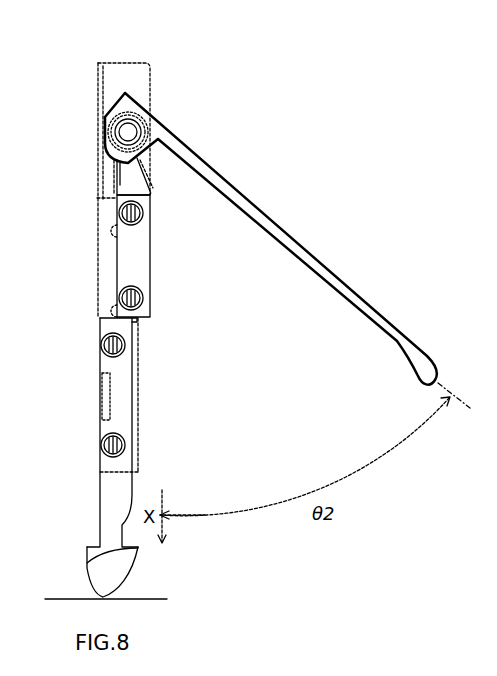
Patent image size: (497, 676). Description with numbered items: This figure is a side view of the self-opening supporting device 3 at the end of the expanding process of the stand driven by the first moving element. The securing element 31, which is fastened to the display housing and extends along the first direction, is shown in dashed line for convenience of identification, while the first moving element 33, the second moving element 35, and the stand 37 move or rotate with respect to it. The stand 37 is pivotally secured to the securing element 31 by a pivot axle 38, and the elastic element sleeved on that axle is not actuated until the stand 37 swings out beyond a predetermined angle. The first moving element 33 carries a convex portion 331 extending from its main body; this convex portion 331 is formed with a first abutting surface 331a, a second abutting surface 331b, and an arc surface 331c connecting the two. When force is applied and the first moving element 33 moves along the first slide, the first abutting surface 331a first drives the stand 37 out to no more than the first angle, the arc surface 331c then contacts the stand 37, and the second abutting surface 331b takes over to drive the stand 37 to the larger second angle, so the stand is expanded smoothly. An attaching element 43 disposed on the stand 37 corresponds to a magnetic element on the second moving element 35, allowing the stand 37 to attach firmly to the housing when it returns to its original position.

The self-opening supporting device 3 is at (367, 110).
The securing element 31 is at (127, 67).
The first moving element 33 is at (139, 264).
The convex portion 331 is at (125, 182).
The first abutting surface 331a is at (153, 182).
The second abutting surface 331b is at (120, 165).
The arc surface 331c is at (150, 168).
The second moving element 35 is at (110, 502).
The stand 37 is at (270, 225).
The pivot axle 38 is at (105, 120).
The attaching element 43 is at (391, 336).